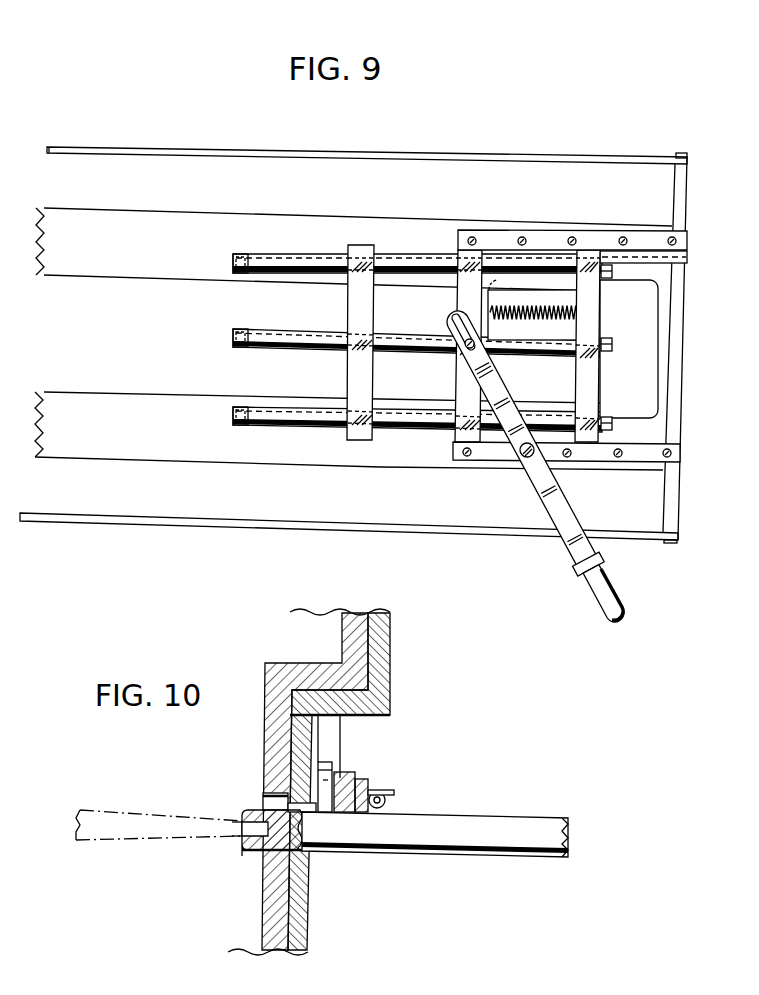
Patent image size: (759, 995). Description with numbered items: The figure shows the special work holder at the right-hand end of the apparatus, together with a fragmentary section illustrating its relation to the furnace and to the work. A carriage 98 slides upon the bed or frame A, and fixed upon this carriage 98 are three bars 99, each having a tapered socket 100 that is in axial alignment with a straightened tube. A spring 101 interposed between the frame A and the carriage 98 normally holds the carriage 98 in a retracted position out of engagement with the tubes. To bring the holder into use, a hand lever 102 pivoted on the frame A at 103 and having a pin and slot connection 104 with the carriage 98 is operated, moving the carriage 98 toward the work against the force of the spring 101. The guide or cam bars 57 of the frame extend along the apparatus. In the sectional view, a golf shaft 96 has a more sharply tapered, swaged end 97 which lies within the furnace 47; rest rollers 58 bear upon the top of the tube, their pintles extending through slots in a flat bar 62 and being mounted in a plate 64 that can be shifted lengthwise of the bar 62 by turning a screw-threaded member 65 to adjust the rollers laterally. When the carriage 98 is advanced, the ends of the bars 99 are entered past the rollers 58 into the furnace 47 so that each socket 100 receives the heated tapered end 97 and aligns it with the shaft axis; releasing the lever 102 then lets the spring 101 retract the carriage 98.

In FIG. 9, the cam bars 57 is at (328, 156).
In FIG. 9, the bed or frame A is at (189, 283).
In FIG. 9, the bars 99 is at (307, 266).
In FIG. 10, the bars 99 is at (497, 822).
In FIG. 9, the tapered socket 100 is at (244, 258).
In FIG. 10, the tapered socket 100 is at (255, 852).
In FIG. 9, the carriage 98 is at (381, 251).
In FIG. 9, the spring 101 is at (548, 311).
In FIG. 9, the hand lever 102 is at (578, 556).
In FIG. 9, the pivot 103 is at (523, 461).
In FIG. 9, the pin and slot connection 104 is at (465, 351).
In FIG. 10, the furnace 47 is at (388, 684).
In FIG. 10, the rollers 58 is at (326, 767).
In FIG. 10, the flat bar 62 is at (344, 772).
In FIG. 10, the plate 64 is at (362, 781).
In FIG. 10, the member 65 is at (381, 793).
In FIG. 10, the shaft 96 is at (123, 809).
In FIG. 10, the swaged end 97 is at (221, 810).